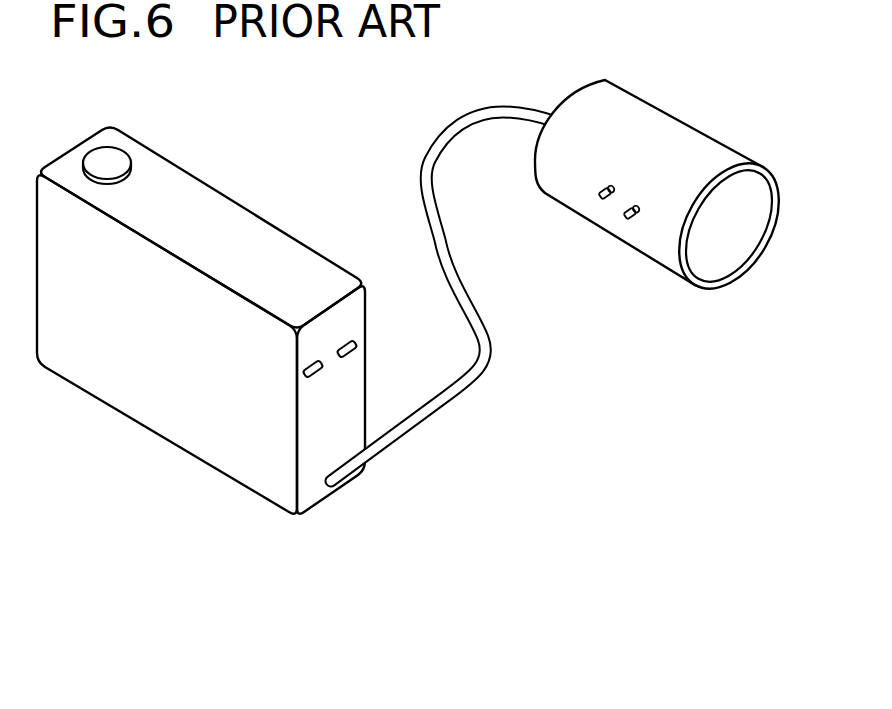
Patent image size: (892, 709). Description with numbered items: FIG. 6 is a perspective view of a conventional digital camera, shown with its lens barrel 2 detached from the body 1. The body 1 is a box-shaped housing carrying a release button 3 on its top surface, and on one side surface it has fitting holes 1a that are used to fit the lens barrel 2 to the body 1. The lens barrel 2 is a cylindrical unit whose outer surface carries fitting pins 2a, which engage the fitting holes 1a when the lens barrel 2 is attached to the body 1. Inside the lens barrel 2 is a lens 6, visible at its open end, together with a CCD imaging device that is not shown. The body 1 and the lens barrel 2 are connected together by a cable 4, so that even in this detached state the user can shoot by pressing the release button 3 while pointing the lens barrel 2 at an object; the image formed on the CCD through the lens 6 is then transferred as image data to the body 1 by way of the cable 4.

The body 1 is at (230, 221).
The fitting holes 1a is at (312, 362).
The lens barrel 2 is at (672, 132).
The fitting pins 2a is at (606, 200).
The release button 3 is at (117, 167).
The cable 4 is at (471, 384).
The lens 6 is at (725, 255).